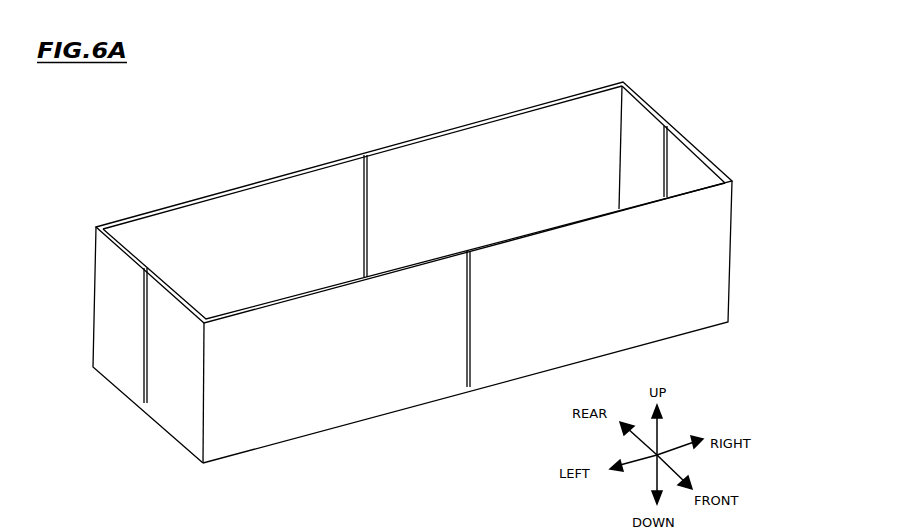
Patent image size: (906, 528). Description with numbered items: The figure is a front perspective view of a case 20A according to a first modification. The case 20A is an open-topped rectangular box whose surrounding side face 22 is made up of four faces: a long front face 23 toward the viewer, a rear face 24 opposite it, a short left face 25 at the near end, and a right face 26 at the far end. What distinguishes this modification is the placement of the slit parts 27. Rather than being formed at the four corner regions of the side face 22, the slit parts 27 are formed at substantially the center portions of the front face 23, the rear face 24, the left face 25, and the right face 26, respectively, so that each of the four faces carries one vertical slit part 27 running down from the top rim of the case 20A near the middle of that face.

The case 20A is at (258, 173).
The side face 22 is at (92, 265).
The front face 23 is at (712, 273).
The rear face 24 is at (452, 172).
The left face 25 is at (117, 328).
The right face 26 is at (692, 173).
The slit parts 27 is at (142, 358).